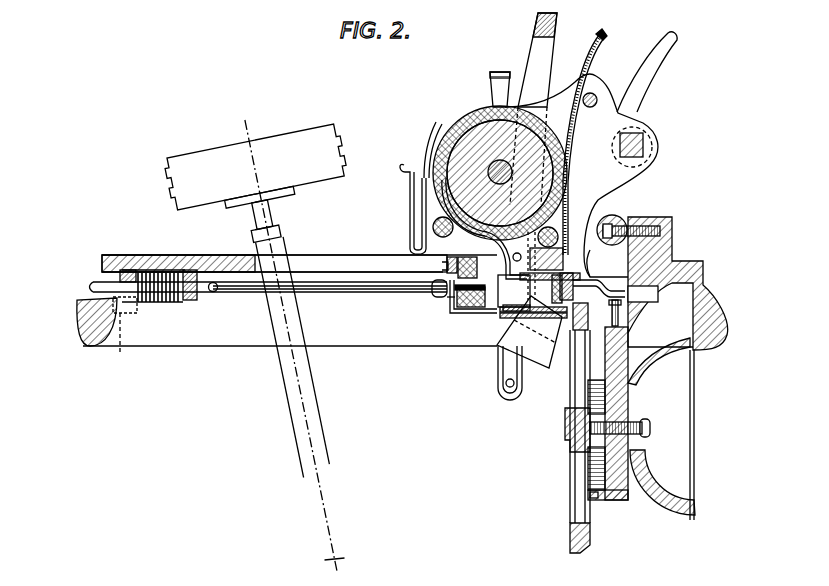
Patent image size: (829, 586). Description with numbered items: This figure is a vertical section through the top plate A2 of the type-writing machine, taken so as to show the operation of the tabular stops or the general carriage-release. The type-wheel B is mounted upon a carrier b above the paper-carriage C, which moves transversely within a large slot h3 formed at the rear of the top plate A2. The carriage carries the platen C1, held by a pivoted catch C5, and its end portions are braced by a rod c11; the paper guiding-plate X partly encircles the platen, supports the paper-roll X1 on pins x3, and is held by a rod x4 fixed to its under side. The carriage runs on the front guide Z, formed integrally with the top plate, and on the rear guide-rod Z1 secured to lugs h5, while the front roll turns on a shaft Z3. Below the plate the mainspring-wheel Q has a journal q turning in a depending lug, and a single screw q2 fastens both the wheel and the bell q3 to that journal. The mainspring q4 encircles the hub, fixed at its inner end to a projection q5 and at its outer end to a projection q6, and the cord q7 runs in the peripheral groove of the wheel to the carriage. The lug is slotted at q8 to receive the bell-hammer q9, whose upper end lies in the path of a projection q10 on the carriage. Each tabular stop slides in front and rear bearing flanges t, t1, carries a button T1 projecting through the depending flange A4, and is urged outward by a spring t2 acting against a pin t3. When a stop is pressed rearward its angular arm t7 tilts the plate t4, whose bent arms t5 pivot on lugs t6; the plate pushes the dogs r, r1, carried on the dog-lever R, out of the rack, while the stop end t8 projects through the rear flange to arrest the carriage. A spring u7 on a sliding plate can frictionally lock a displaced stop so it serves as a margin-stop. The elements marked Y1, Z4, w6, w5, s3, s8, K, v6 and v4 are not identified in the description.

The top plate A2 is at (207, 259).
The depending flange A4 is at (80, 322).
The handle or button T1 is at (93, 287).
The pin t3 is at (135, 270).
The front bearing lug or flange t is at (188, 270).
The spring t2 is at (172, 300).
The spring u7 is at (129, 318).
The hidden member w6 is at (121, 342).
The type-wheel B is at (255, 183).
The frame or carrier b is at (317, 407).
The platen C1 is at (468, 111).
The catch C5 is at (497, 72).
The type bar Y1 is at (537, 33).
The guiding-plate X is at (597, 36).
The paper-carriage C is at (581, 166).
The strengthening rod or brace c11 is at (590, 107).
The lever arm Z4 is at (660, 60).
The shaft Z3 is at (643, 140).
The rear guide Z1 is at (614, 216).
The lugs h5 is at (660, 233).
The bell-hammer q9 is at (650, 333).
The journal q is at (640, 423).
The slot q8 is at (627, 341).
The projection q10 is at (608, 288).
The transverse slot h3 is at (600, 262).
The cord or chain q7 is at (643, 381).
The bell q3 is at (690, 411).
The mainspring-wheel Q is at (566, 432).
The screw q2 is at (647, 438).
The projection q5 is at (578, 418).
The mainspring q4 is at (587, 472).
The projection q6 is at (596, 499).
The shaft housing w5 is at (570, 355).
The pins x3 is at (550, 266).
The rod or bar x4 is at (553, 234).
The bar s3 is at (550, 289).
The block s8 is at (574, 288).
The housing K is at (316, 244).
The stop projection t8 is at (466, 267).
The front guide Z is at (463, 308).
The arm t7 is at (477, 312).
The rear bearing lug or flange t1 is at (447, 297).
The plate t4 is at (500, 318).
The dog-lever R is at (529, 332).
The dog r is at (527, 321).
The dog r1 is at (556, 328).
The arms t5 is at (510, 373).
The lugs t6 is at (519, 404).
The strip v6 is at (406, 170).
The strip v4 is at (436, 124).
The paper-roll X1 is at (433, 228).